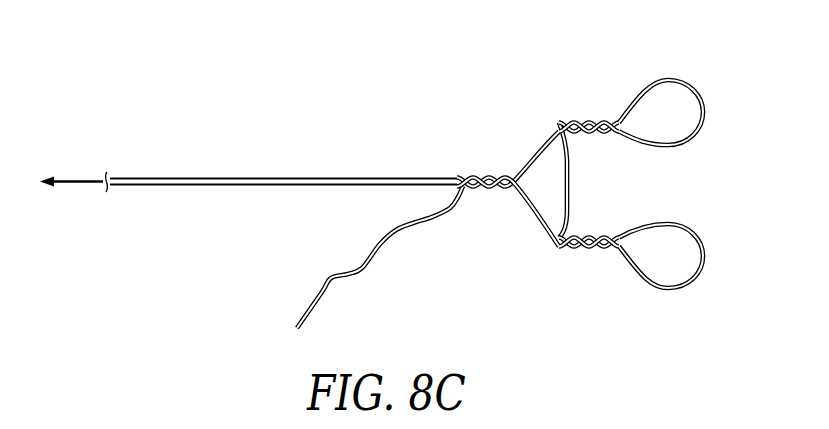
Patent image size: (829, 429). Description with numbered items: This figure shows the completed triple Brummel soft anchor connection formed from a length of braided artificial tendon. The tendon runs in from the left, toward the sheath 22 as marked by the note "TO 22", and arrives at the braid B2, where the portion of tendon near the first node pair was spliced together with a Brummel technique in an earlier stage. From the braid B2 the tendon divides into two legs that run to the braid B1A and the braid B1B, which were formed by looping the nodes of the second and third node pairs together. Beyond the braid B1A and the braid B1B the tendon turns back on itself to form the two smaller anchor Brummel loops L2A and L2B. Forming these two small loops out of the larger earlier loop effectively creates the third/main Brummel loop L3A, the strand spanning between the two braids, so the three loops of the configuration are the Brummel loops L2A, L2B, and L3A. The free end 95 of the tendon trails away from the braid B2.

The sheath 22 is at (73, 186).
The end of the tendon 95 is at (303, 346).
The braid B2 is at (510, 165).
The braid B1A is at (610, 108).
The braid B1B is at (610, 252).
The Brummel loop L2A is at (672, 102).
The Brummel loop L2B is at (672, 266).
The third/main Brummel loop L3A is at (545, 183).